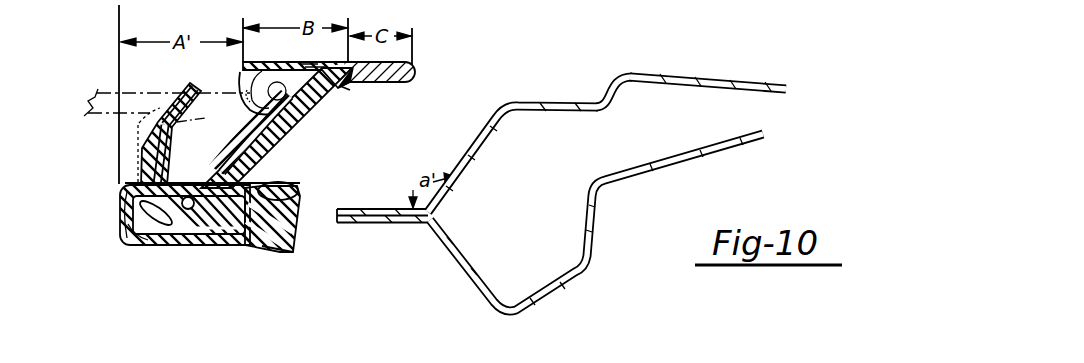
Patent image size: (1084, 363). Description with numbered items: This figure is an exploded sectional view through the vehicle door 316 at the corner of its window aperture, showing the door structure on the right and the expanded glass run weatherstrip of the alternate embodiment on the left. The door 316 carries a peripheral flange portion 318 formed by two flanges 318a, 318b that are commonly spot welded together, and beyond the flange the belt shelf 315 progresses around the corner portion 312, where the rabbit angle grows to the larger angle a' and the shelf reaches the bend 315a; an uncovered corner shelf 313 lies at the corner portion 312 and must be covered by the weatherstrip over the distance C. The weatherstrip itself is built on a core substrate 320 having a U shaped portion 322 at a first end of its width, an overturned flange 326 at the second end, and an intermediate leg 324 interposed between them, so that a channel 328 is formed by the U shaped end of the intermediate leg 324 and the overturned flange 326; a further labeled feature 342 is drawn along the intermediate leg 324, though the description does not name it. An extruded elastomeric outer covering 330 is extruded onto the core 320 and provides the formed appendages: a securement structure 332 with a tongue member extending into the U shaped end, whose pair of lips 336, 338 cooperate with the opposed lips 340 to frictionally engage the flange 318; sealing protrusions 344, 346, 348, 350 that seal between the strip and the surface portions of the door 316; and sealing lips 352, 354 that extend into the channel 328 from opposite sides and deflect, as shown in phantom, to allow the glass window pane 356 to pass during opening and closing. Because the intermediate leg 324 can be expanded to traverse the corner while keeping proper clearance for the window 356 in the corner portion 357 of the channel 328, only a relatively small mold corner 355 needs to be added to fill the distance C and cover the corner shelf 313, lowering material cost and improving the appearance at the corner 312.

The corner portion 312 is at (605, 82).
The corner shelf 313 is at (580, 100).
The belt shelf 315 is at (474, 152).
The bend 315a is at (511, 102).
The door 316 is at (630, 178).
The peripheral flange portion 318 is at (343, 198).
The flange 318a is at (368, 208).
The flange 318b is at (383, 226).
The core substrate 320 is at (434, 181).
The U shaped portion 322 is at (177, 240).
The intermediate leg 324 is at (292, 130).
The overturned flange 326 is at (298, 63).
The channel 328 is at (243, 148).
The outer covering 330 is at (112, 219).
The securement structure 332 is at (127, 234).
The lip 336 is at (434, 181).
The lip 338 is at (165, 232).
The opposed lips 340 is at (122, 188).
The leg strip 342 is at (252, 181).
The sealing protrusion 344 is at (285, 253).
The sealing protrusion 346 is at (247, 217).
The sealing protrusion 348 is at (258, 192).
The sealing protrusion 350 is at (348, 92).
The sealing lip 352 is at (192, 88).
The sealing lip 354 is at (240, 80).
The mold corner 355 is at (398, 82).
The glass window pane 356 is at (108, 92).
The corner portion 357 is at (326, 66).